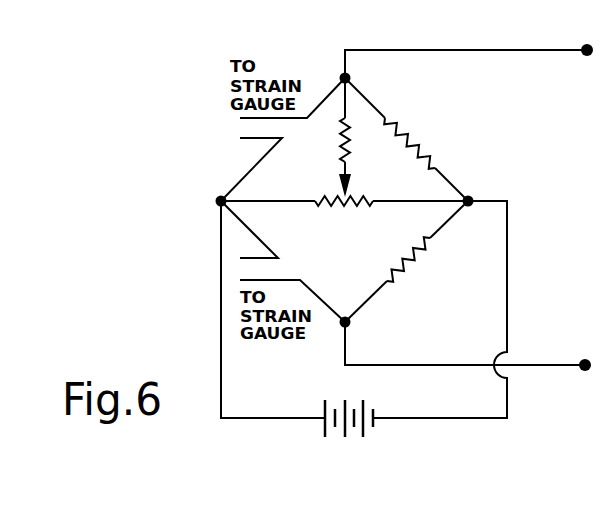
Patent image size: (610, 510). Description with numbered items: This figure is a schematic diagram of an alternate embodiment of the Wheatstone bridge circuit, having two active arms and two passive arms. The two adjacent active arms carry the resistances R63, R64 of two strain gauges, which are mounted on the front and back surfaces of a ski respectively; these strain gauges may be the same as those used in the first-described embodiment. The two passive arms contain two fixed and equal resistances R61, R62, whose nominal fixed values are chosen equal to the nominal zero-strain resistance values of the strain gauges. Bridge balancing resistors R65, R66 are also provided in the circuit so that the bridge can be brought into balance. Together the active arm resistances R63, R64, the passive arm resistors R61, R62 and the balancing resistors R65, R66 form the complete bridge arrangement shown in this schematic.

The fixed resistor R61 is at (406, 139).
The fixed resistor R62 is at (406, 261).
The strain gauge resistance R63 is at (274, 163).
The strain gauge resistance R64 is at (274, 238).
The bridge balancing resistor R65 is at (344, 213).
The bridge balancing resistor R66 is at (364, 137).